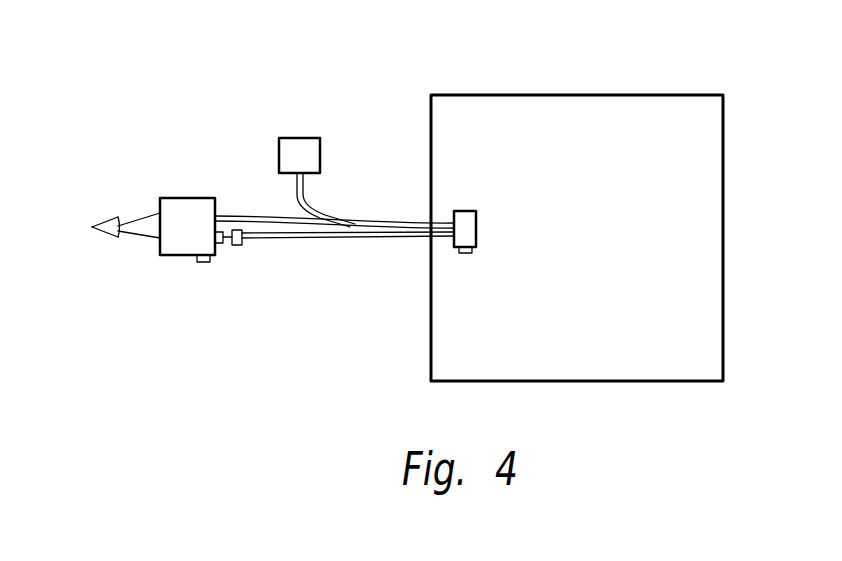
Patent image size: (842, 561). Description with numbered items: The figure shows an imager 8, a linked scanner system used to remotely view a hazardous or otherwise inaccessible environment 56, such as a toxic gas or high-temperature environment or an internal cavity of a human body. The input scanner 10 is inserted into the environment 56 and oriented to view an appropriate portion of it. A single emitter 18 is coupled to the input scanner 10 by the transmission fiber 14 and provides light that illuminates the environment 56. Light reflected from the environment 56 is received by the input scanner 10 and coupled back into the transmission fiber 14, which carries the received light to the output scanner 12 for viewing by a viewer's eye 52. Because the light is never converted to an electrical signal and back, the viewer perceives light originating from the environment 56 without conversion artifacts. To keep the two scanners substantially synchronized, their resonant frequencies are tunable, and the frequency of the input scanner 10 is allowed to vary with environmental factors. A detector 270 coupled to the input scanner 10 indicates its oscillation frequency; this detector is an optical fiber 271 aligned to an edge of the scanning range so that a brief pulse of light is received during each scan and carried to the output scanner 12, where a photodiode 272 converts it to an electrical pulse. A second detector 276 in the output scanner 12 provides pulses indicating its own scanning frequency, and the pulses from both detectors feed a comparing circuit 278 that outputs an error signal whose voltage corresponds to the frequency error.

The imager 8 is at (380, 276).
The input scanner 10 is at (473, 211).
The output scanner 12 is at (172, 198).
The transmission fiber 14 is at (378, 222).
The emitter 18 is at (297, 138).
The viewer's eye 52 is at (118, 237).
The environment 56 is at (658, 115).
The detector 270 is at (472, 253).
The optical fiber 271 is at (290, 245).
The photodiode 272 is at (238, 246).
The second detector 276 is at (205, 262).
The comparing circuit 278 is at (222, 245).